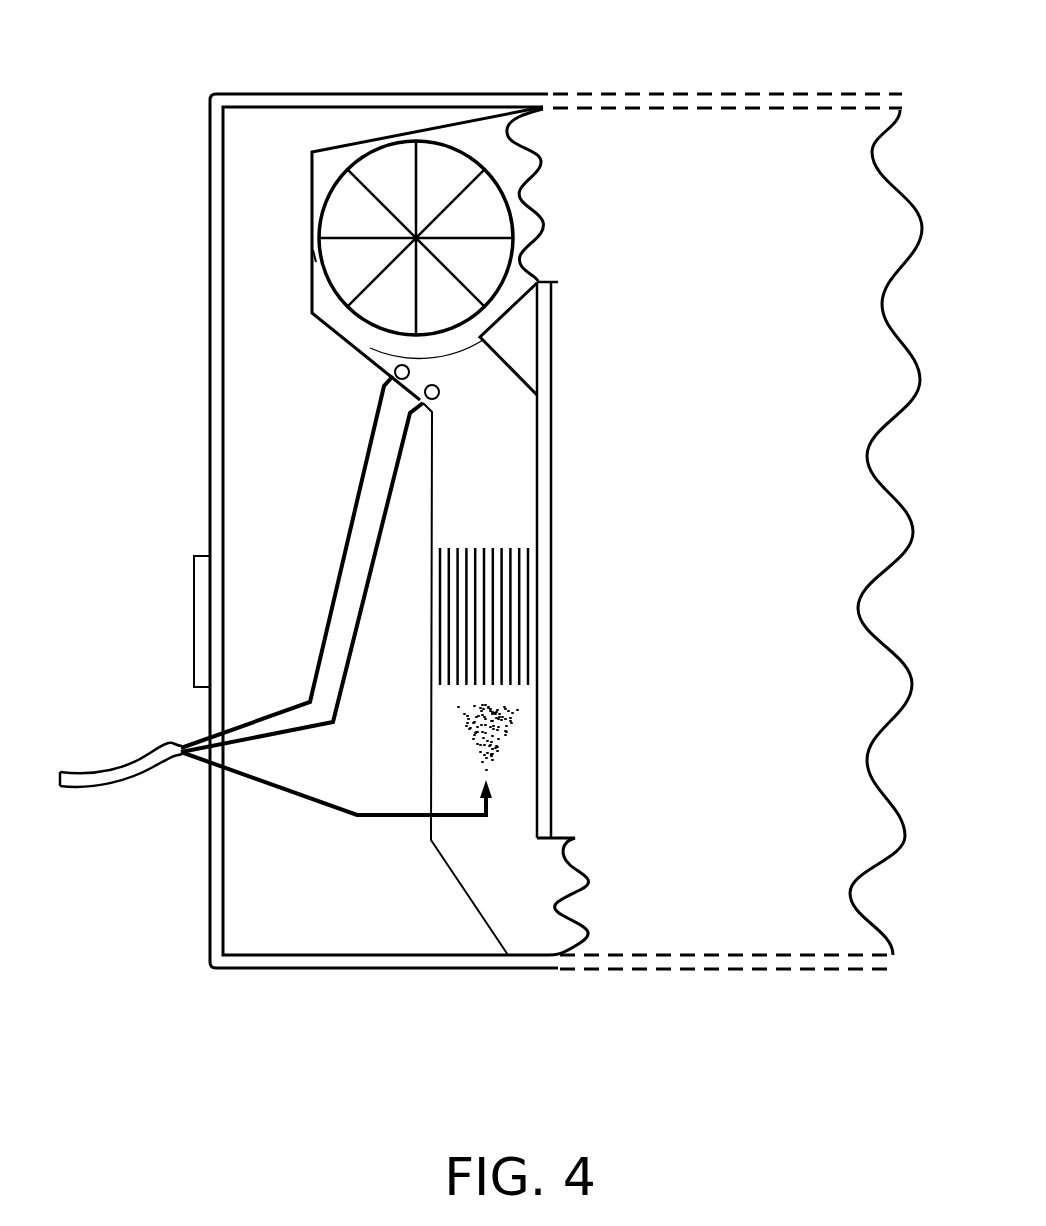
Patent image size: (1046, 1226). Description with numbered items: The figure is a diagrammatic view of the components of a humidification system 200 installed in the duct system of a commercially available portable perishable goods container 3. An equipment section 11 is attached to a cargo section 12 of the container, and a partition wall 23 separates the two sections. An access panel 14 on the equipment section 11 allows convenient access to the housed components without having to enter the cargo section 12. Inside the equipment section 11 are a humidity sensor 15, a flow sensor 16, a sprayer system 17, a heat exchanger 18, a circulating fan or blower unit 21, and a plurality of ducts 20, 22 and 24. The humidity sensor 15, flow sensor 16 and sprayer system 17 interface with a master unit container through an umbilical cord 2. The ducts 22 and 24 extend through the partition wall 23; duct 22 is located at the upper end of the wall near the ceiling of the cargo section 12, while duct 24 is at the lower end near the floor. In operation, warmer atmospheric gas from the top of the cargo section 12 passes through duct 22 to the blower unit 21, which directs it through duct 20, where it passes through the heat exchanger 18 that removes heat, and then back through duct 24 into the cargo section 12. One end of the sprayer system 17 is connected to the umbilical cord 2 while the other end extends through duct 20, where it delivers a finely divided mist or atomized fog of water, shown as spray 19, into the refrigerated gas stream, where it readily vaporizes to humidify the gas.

The umbilical cord 2 is at (108, 770).
The perishable goods container 3 is at (872, 72).
The equipment section 11 is at (263, 93).
The cargo section 12 is at (756, 95).
The access panel 14 is at (194, 608).
The humidity sensor 15 is at (373, 565).
The flow sensor 16 is at (357, 485).
The sprayer system 17 is at (260, 787).
The heat exchanger 18 is at (448, 687).
The spray 19 is at (483, 760).
The duct 20 is at (370, 348).
The blower unit 21 is at (330, 185).
The duct 22 is at (540, 140).
The partition wall 23 is at (553, 313).
The duct 24 is at (595, 932).
The humidification system 200 is at (260, 270).